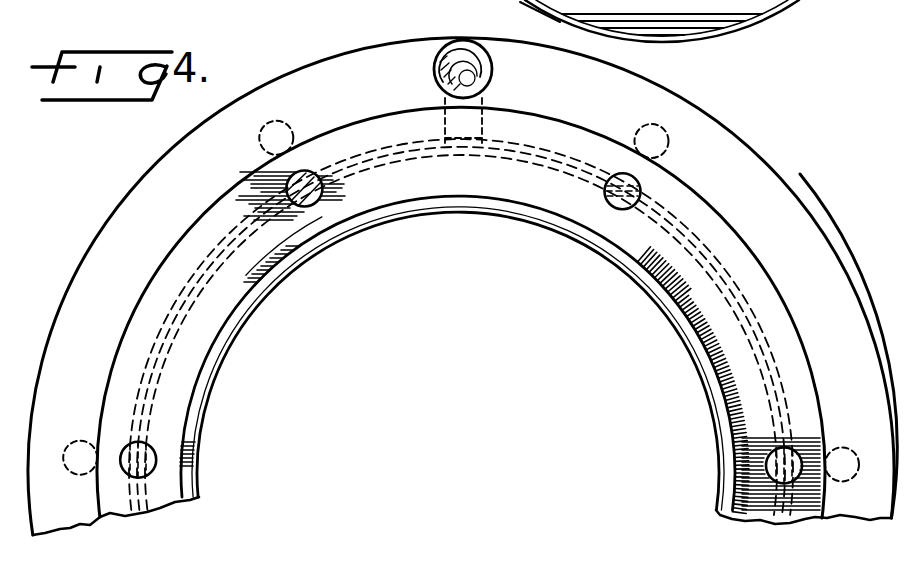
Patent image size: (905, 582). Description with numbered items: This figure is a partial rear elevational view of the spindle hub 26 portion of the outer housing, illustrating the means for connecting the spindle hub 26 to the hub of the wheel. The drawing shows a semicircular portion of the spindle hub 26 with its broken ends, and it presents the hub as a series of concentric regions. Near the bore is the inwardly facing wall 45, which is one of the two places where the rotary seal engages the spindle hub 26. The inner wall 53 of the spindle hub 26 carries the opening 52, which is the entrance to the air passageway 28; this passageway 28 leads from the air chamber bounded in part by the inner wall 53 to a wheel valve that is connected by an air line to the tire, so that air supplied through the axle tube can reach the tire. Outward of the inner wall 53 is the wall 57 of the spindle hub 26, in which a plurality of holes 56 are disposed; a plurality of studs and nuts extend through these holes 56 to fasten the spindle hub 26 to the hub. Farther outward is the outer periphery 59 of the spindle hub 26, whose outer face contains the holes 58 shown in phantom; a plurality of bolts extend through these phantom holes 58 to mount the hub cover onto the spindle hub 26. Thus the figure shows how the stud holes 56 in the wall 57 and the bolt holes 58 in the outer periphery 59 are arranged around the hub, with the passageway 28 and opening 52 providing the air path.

The spindle hub 26 is at (361, 38).
The air passageway 28 is at (460, 40).
The inwardly facing wall 45 is at (707, 367).
The opening 52 is at (453, 152).
The inner wall 53 is at (204, 262).
The holes 56 is at (306, 206).
The wall 57 is at (718, 216).
The holes shown in phantom 58 is at (290, 122).
The outer periphery 59 is at (807, 200).